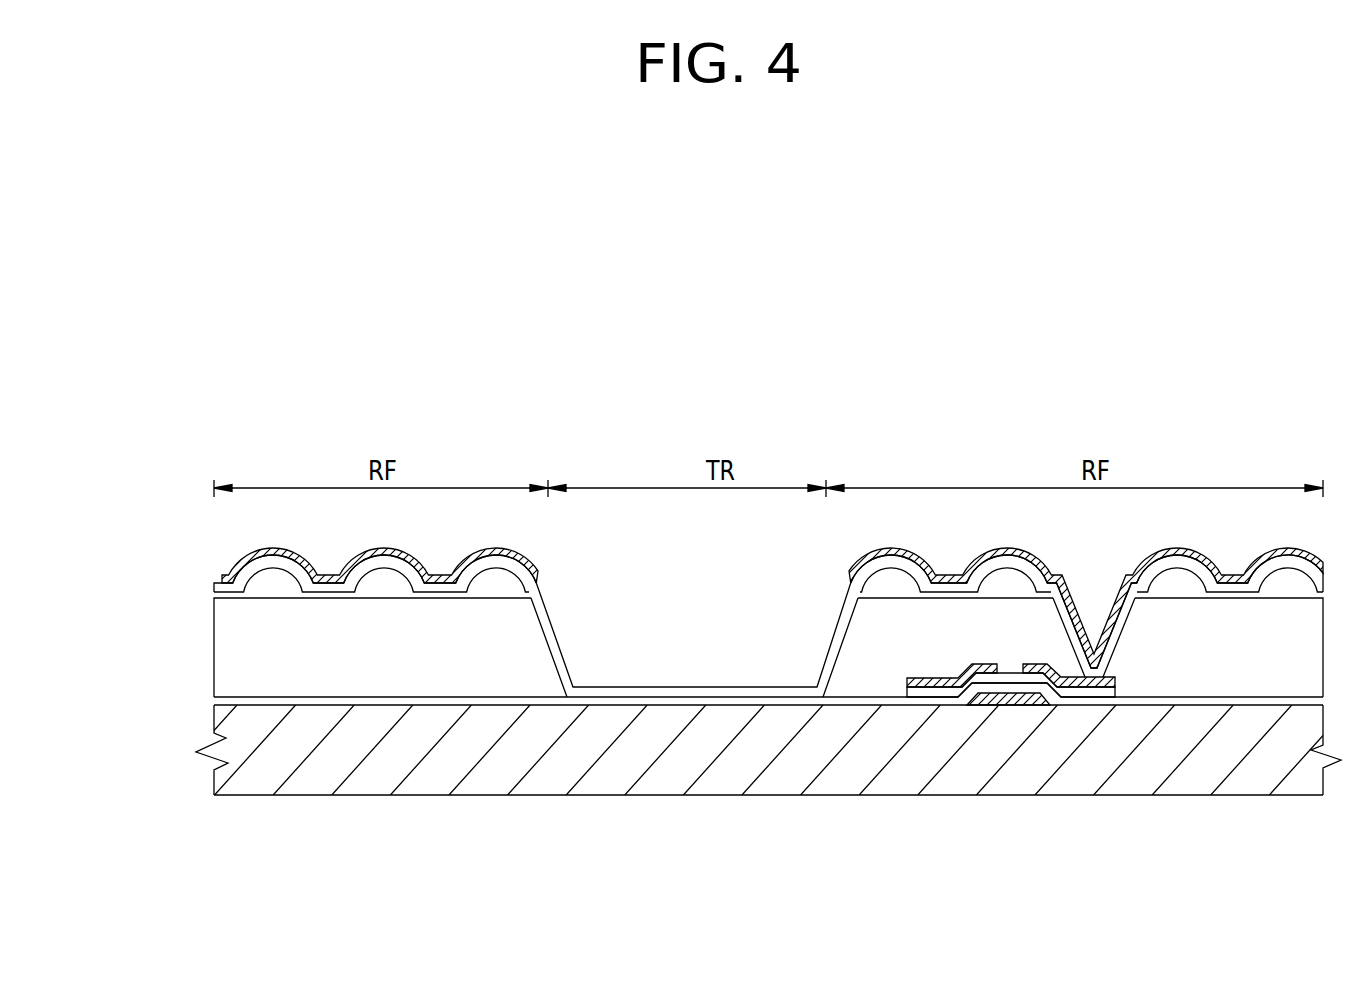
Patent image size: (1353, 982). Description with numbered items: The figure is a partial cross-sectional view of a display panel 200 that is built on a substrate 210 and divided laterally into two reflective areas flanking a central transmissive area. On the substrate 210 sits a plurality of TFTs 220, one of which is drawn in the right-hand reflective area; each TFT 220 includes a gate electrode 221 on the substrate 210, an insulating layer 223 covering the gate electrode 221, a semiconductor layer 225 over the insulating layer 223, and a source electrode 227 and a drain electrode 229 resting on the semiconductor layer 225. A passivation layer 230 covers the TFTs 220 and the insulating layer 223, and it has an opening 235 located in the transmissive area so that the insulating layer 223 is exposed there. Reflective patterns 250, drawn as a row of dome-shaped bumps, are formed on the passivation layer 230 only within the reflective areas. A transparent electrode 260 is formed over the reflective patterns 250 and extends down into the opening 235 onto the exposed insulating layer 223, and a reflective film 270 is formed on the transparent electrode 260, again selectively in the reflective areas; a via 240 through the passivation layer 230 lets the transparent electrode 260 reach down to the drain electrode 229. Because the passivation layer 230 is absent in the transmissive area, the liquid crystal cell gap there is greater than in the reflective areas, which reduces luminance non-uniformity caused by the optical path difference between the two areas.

The display panel 200 is at (772, 275).
The substrate 210 is at (227, 740).
The TFT 220 is at (768, 786).
The gate electrode 221 is at (990, 700).
The insulating layer 223 is at (1168, 700).
The semiconductor layer 225 is at (1062, 690).
The source electrode 227 is at (928, 690).
The drain electrode 229 is at (1074, 761).
The passivation layer 230 is at (227, 672).
The opening 235 is at (727, 655).
The via hole 240 is at (1102, 592).
The reflective pattern 250 is at (382, 587).
The transparent electrode 260 is at (213, 592).
The reflective film 270 is at (215, 586).